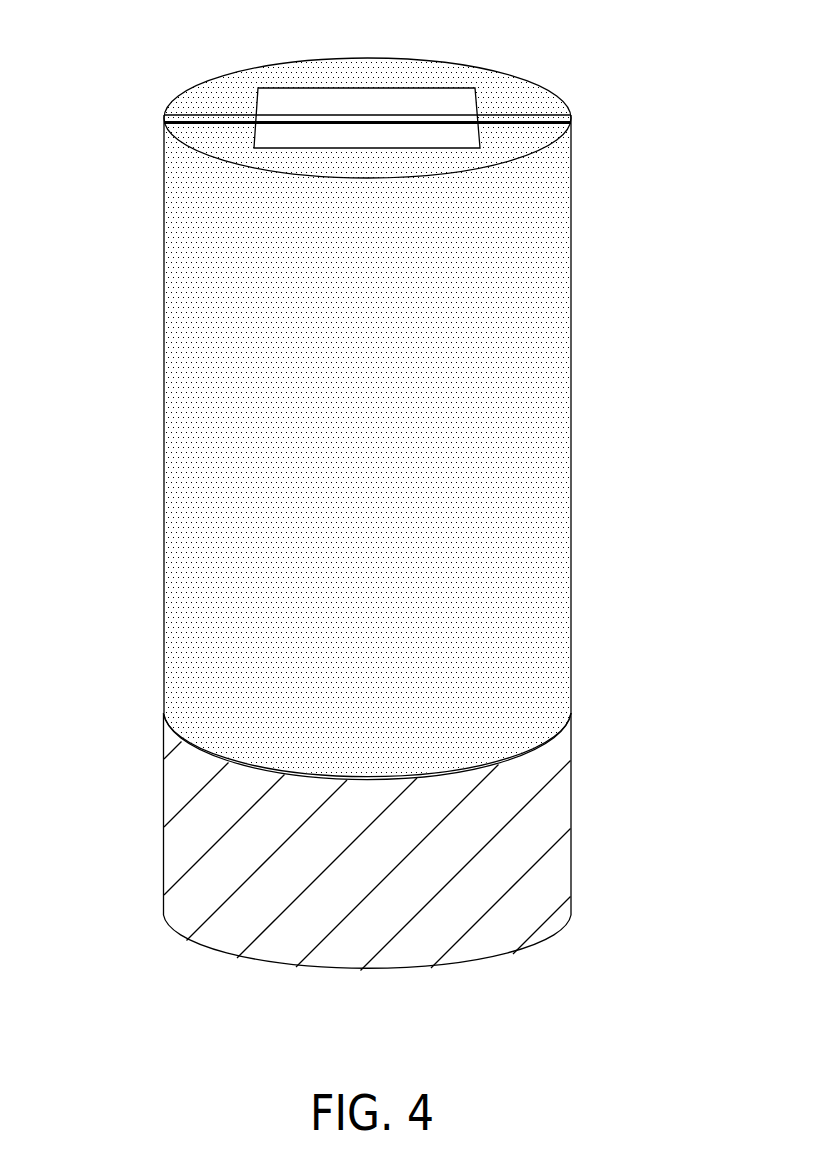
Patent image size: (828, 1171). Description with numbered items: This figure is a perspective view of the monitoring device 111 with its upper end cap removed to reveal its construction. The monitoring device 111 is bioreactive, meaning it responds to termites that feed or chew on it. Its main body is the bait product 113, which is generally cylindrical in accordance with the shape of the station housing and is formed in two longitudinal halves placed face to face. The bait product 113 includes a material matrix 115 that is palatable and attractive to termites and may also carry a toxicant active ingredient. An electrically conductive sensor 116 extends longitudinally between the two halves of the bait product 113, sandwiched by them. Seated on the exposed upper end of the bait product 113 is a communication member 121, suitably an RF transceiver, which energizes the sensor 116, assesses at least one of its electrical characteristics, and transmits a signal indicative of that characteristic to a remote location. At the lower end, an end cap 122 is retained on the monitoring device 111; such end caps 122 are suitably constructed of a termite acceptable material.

The monitoring device 111 is at (368, 486).
The bait product 113 is at (315, 414).
The material matrix 115 is at (427, 416).
The electrically conductive sensor 116 is at (367, 62).
The communication member 121 is at (367, 75).
The end cap 122 is at (309, 842).